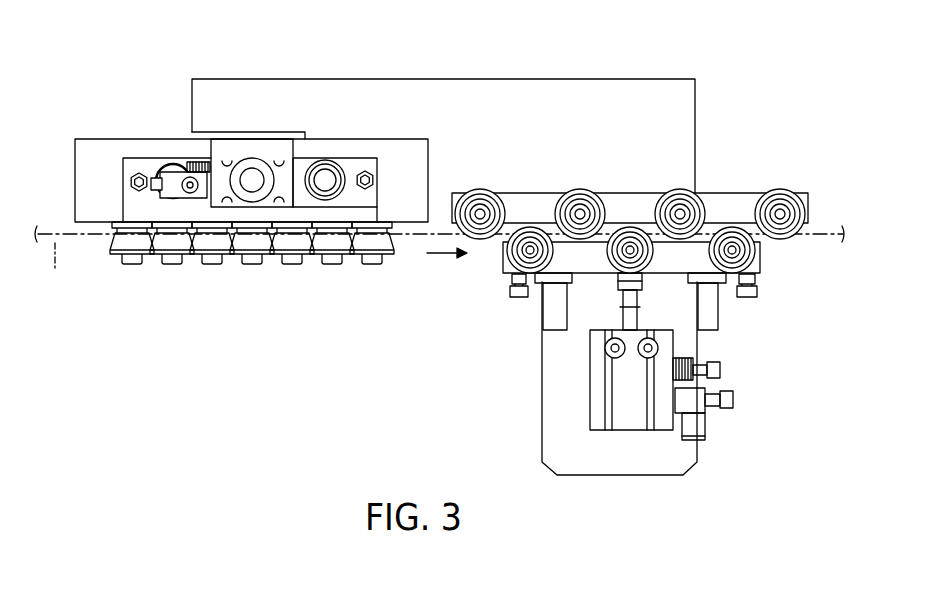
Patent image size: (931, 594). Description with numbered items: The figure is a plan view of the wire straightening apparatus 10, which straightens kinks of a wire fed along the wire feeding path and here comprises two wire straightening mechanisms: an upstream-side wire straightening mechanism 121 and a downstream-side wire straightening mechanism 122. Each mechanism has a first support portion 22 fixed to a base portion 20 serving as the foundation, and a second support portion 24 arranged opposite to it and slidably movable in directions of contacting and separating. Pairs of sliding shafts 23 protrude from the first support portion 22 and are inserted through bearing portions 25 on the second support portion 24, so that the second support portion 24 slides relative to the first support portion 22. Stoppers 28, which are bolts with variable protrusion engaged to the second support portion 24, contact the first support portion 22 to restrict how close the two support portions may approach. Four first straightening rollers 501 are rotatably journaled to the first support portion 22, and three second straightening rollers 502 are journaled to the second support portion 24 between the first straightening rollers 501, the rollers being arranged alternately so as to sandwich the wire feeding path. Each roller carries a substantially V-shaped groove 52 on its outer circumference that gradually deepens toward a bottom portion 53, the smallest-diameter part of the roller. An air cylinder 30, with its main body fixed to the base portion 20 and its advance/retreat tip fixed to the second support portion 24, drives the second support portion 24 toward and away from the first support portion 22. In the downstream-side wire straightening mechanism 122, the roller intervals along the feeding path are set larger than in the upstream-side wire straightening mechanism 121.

The wire straightening apparatus 10 is at (73, 67).
The upstream-side wire straightening mechanism 121 is at (121, 100).
The downstream-side wire straightening mechanism 122 is at (778, 113).
The base portion 20 is at (512, 92).
The first support portion 22 is at (87, 148).
The second support portion 24 is at (152, 160).
The air cylinder 30 is at (213, 160).
The stopper 28 is at (130, 182).
The bearing portion 25 is at (327, 176).
The sliding shaft 23 is at (336, 178).
The first straightening roller 501 is at (562, 195).
The second straightening roller 502 is at (215, 254).
The bottom portion 53 is at (250, 254).
The groove 52 is at (283, 254).